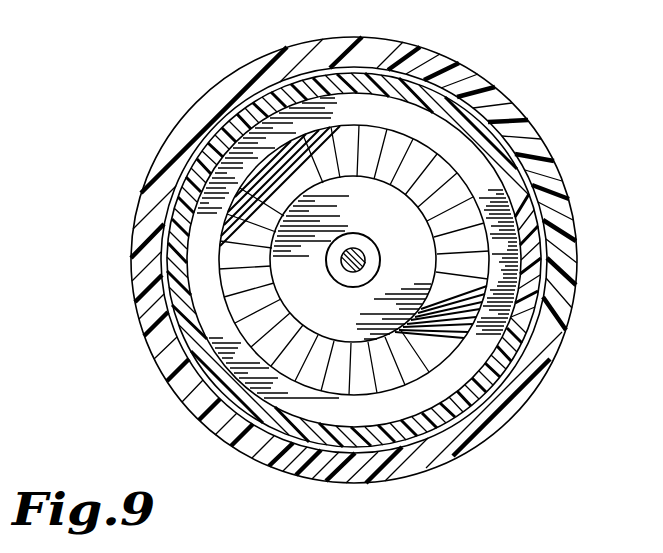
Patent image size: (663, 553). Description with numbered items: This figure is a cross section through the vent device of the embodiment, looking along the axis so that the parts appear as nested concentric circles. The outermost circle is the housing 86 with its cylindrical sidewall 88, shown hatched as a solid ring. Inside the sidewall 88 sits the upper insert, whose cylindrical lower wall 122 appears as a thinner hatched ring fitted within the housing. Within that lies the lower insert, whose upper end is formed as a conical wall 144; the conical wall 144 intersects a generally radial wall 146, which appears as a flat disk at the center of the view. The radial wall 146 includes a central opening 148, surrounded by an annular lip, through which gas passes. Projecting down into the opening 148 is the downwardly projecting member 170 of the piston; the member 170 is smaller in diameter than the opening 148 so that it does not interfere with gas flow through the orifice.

The housing 86 is at (130, 240).
The cylindrical sidewall 88 is at (132, 292).
The cylindrical lower wall 122 is at (200, 147).
The conical wall 144 is at (460, 320).
The radial wall 146 is at (380, 197).
The central opening 148 is at (368, 253).
The downwardly projecting member 170 is at (360, 267).